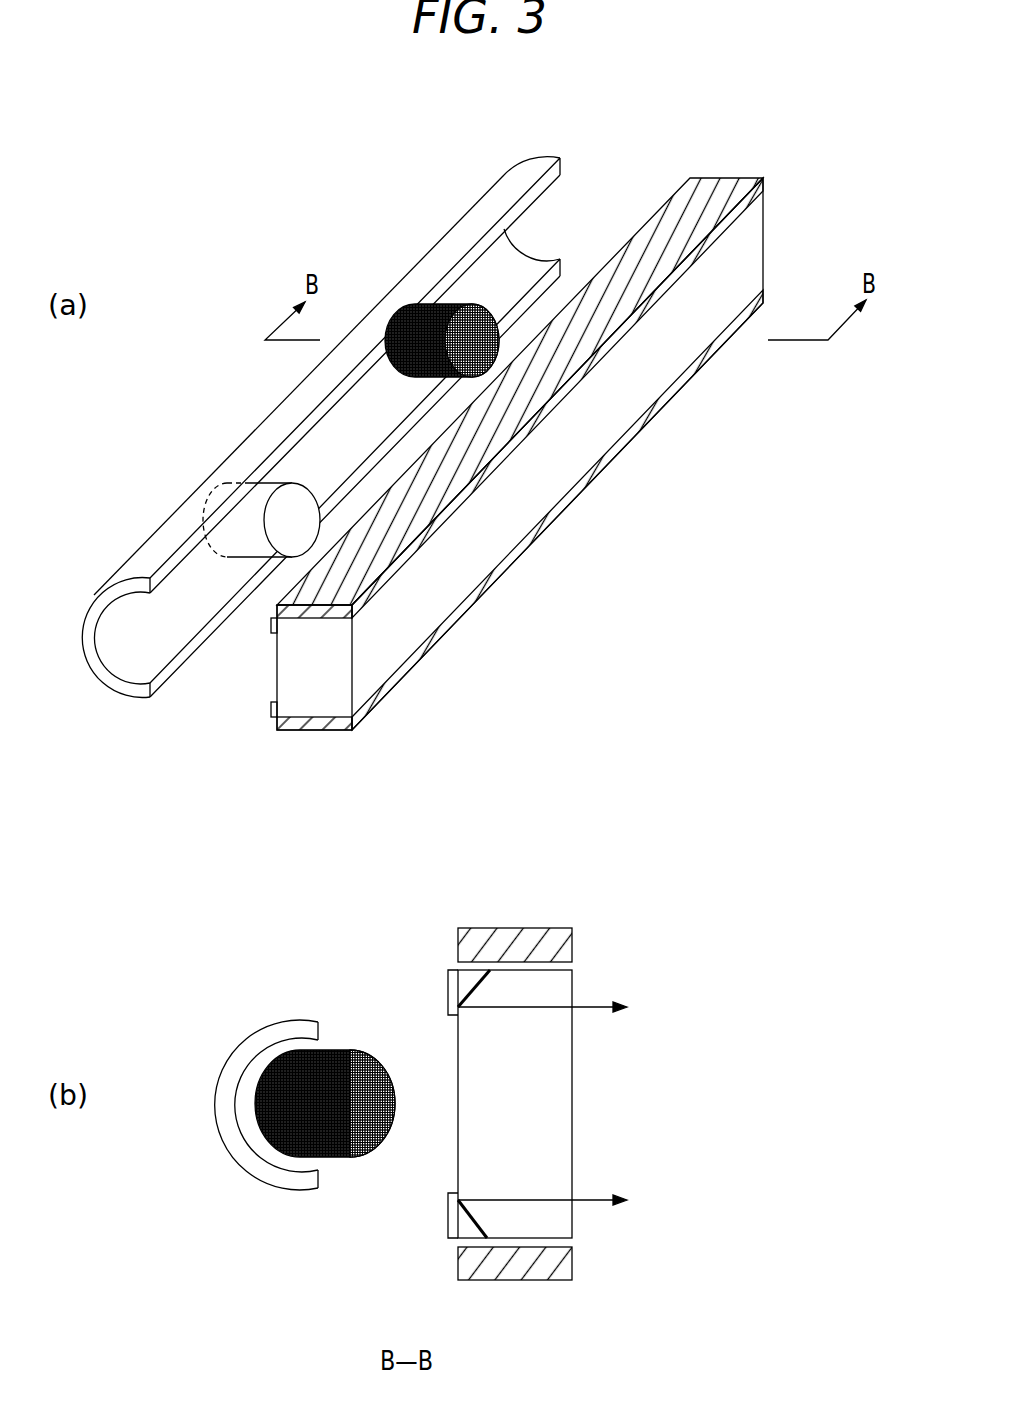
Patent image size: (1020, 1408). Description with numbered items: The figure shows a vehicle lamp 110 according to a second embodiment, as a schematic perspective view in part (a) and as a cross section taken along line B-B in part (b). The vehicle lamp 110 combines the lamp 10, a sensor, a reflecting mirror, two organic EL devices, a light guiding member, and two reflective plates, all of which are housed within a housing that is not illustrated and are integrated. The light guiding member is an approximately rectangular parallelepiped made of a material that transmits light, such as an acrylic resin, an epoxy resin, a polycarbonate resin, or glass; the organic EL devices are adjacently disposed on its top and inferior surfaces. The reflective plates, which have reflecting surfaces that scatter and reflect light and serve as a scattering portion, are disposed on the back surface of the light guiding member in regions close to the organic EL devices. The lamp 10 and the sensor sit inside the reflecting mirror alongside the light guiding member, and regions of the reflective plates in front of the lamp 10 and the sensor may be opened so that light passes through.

The lamp 10 is at (242, 520).
The vehicle lamp 110 is at (432, 824).